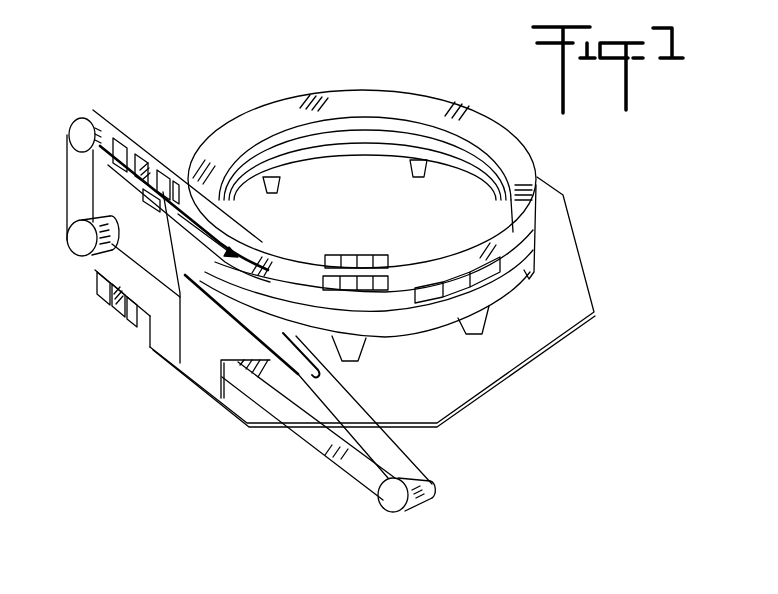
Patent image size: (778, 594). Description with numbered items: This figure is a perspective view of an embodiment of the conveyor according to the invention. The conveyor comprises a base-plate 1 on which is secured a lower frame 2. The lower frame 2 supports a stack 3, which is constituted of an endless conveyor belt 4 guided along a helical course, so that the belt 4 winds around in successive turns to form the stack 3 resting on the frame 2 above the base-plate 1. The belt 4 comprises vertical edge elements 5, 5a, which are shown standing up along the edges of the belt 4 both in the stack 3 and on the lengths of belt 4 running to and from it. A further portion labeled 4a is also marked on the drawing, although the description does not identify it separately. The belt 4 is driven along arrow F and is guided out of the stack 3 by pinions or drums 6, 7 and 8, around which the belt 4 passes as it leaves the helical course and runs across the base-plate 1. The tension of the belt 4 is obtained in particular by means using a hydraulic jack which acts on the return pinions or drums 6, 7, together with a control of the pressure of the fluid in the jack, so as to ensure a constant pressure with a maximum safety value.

The base-plate 1 is at (563, 301).
The lower frame 2 is at (548, 256).
The stack 3 is at (546, 211).
The endless conveyor belt 4 is at (420, 302).
The strip tab 4a is at (393, 298).
The vertical edge element 5 is at (160, 196).
The vertical edge element 5a is at (162, 170).
The pinion or drum 6 is at (80, 137).
The pinion or drum 7 is at (388, 500).
The pinion or drum 8 is at (80, 241).